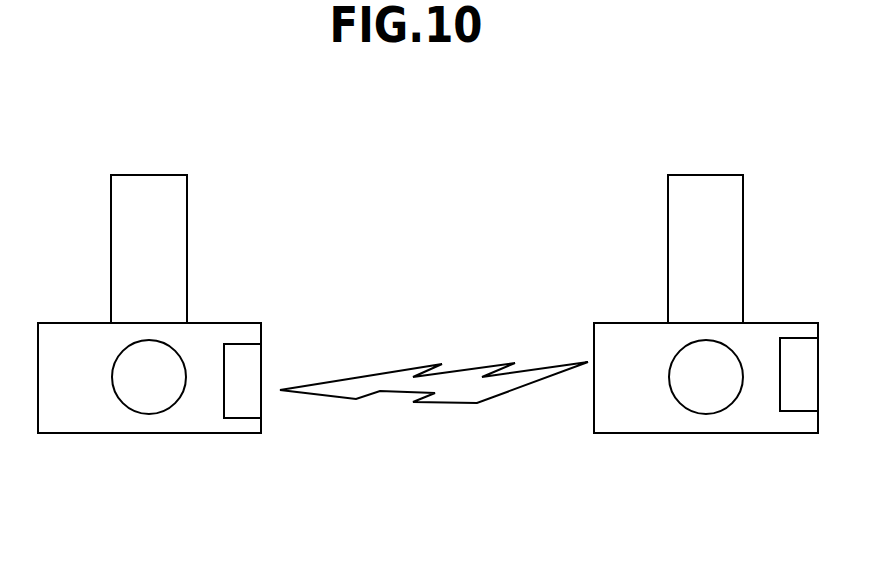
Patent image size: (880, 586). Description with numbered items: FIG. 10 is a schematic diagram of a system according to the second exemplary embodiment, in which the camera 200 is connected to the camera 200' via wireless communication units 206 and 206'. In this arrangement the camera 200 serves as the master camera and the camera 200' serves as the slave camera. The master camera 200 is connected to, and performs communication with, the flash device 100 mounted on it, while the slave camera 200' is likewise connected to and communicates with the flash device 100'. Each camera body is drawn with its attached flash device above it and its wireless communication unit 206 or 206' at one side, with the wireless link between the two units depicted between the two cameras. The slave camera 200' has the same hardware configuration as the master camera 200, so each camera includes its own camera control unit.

The flash device 100 is at (149, 221).
The camera 200 is at (149, 407).
The wireless communication unit 206 is at (235, 417).
The flash device 100' is at (705, 221).
The camera 200' is at (706, 407).
The wireless communication unit 206' is at (795, 410).